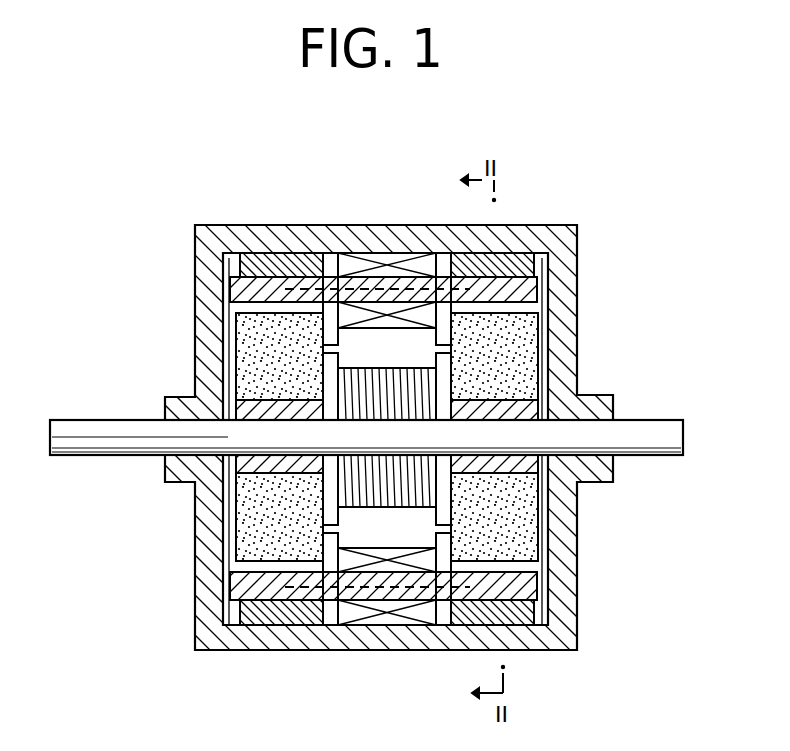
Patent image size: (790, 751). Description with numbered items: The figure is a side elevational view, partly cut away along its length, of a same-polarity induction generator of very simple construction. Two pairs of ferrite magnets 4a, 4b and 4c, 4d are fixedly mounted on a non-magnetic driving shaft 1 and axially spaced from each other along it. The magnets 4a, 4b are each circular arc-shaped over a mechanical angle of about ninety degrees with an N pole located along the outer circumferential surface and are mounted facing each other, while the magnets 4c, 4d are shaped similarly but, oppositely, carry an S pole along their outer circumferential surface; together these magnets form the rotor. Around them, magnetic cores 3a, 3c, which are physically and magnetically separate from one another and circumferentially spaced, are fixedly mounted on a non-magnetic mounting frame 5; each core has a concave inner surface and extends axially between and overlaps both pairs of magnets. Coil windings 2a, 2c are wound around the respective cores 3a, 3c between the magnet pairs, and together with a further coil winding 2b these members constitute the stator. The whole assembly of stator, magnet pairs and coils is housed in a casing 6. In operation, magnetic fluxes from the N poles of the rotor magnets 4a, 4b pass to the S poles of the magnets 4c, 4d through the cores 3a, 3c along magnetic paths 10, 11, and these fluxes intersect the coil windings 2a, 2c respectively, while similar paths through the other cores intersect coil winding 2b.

The non-magnetic driving shaft 1 is at (72, 455).
The coil winding 2a is at (388, 262).
The coil winding 2b is at (420, 393).
The coil winding 2c is at (385, 622).
The magnetic core 3a is at (525, 290).
The magnetic core 3c is at (520, 623).
The ferrite magnet 4a is at (523, 343).
The ferrite magnet 4b is at (527, 512).
The ferrite magnet 4c is at (253, 348).
The ferrite magnet 4d is at (253, 522).
The non-magnetic mounting frame 5 is at (267, 262).
The casing 6 is at (324, 228).
The magnetic path 10 is at (437, 287).
The magnetic path 11 is at (424, 600).